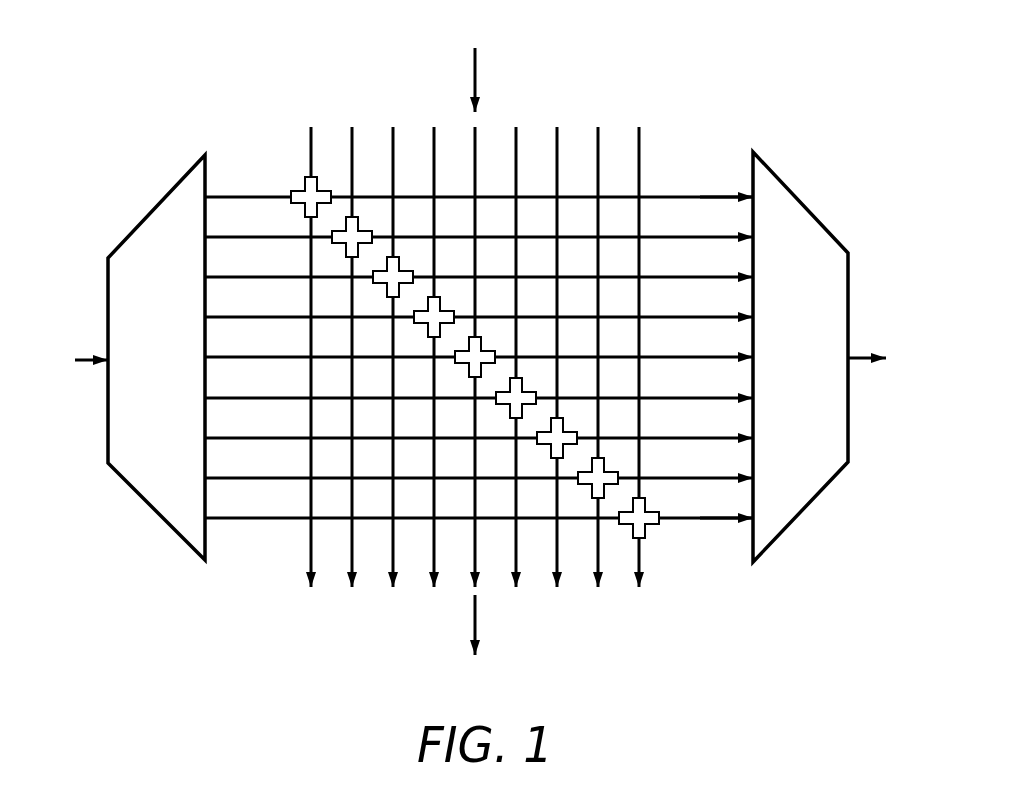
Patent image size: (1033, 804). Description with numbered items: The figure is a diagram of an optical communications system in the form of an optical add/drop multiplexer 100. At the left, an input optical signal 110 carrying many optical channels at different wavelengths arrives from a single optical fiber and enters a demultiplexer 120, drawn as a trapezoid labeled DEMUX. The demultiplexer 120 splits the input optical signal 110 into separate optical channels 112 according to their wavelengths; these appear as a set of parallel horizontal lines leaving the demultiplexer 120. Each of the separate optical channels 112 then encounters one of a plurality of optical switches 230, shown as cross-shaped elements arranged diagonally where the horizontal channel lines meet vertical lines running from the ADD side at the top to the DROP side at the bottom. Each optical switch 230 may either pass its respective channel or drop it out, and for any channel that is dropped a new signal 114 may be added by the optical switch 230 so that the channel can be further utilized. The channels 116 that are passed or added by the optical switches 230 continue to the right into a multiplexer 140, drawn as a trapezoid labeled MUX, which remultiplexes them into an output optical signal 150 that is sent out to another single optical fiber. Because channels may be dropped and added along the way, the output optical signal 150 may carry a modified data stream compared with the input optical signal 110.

The optical add/drop multiplexer 100 is at (190, 82).
The input optical signal 110 is at (82, 358).
The separate optical channels 112 is at (222, 178).
The new signal 114 is at (477, 70).
The channels 116 is at (732, 176).
The demultiplexer 120 is at (163, 218).
The multiplexer 140 is at (793, 210).
The output optical signal 150 is at (858, 355).
The optical switches 230 is at (655, 528).